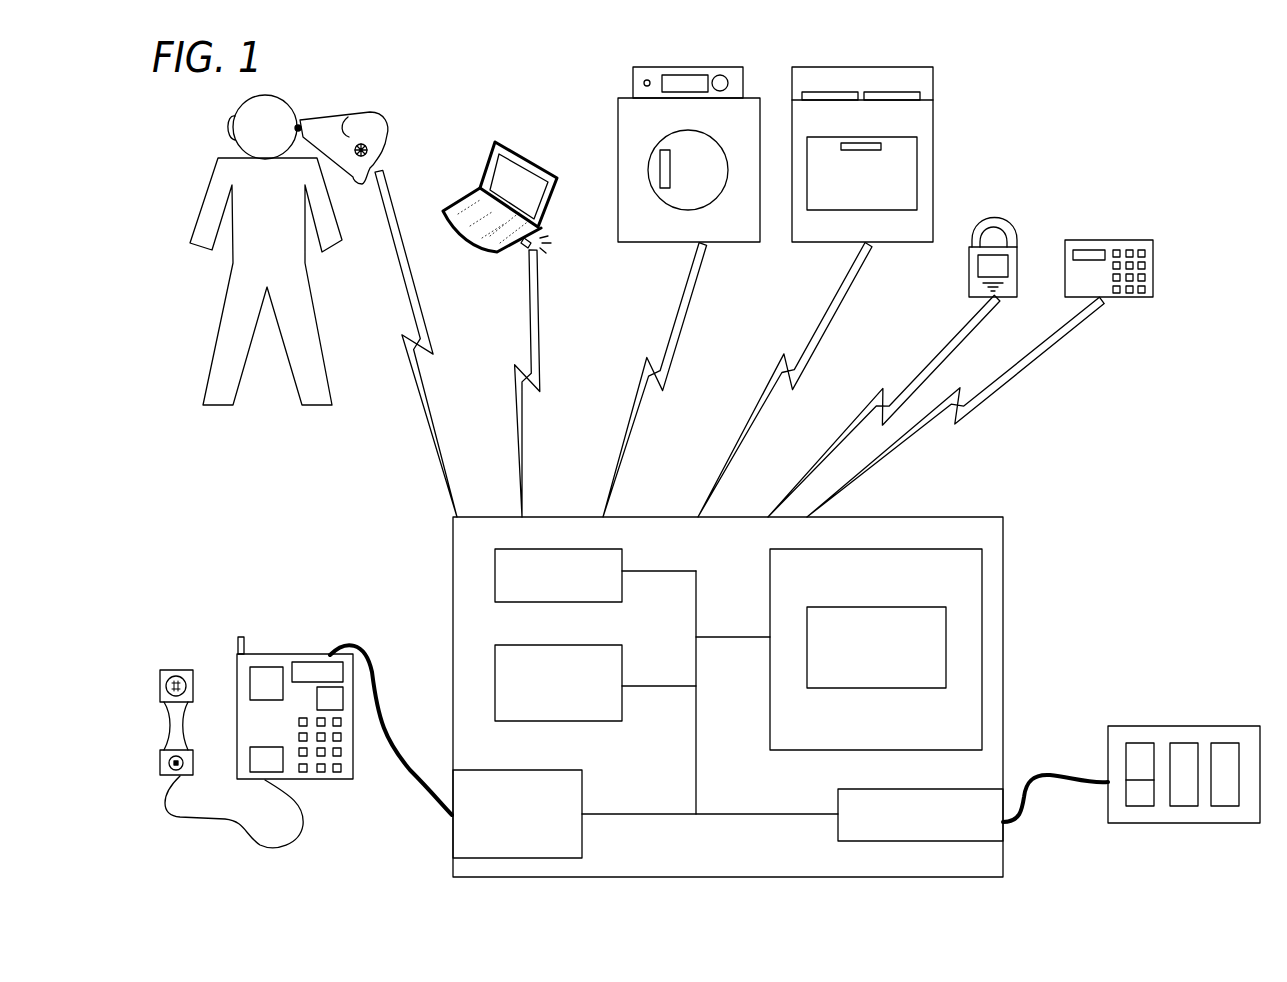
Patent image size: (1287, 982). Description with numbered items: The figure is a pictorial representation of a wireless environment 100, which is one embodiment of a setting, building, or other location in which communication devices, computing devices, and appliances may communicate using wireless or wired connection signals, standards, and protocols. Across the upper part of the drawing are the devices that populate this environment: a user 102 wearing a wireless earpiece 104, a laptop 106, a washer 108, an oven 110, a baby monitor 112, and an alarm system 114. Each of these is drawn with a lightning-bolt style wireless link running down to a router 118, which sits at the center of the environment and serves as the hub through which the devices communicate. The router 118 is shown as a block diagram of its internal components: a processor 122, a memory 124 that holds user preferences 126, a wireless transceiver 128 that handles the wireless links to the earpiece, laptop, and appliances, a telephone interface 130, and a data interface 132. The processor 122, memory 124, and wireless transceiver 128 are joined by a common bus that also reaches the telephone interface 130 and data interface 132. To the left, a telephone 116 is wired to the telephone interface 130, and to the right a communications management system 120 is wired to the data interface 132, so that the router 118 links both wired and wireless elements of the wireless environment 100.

The wireless environment 100 is at (362, 62).
The user 102 is at (315, 388).
The wireless earpiece 104 is at (373, 143).
The laptop 106 is at (527, 173).
The washer 108 is at (712, 223).
The oven 110 is at (888, 223).
The baby monitor 112 is at (1012, 253).
The alarm system 114 is at (1112, 250).
The telephone 116 is at (268, 682).
The router 118 is at (688, 567).
The communications management system 120 is at (1212, 738).
The processor 122 is at (543, 599).
The memory 124 is at (876, 649).
The user preferences 126 is at (861, 684).
The wireless transceiver 128 is at (543, 718).
The telephone interface 130 is at (502, 851).
The data interface 132 is at (905, 839).